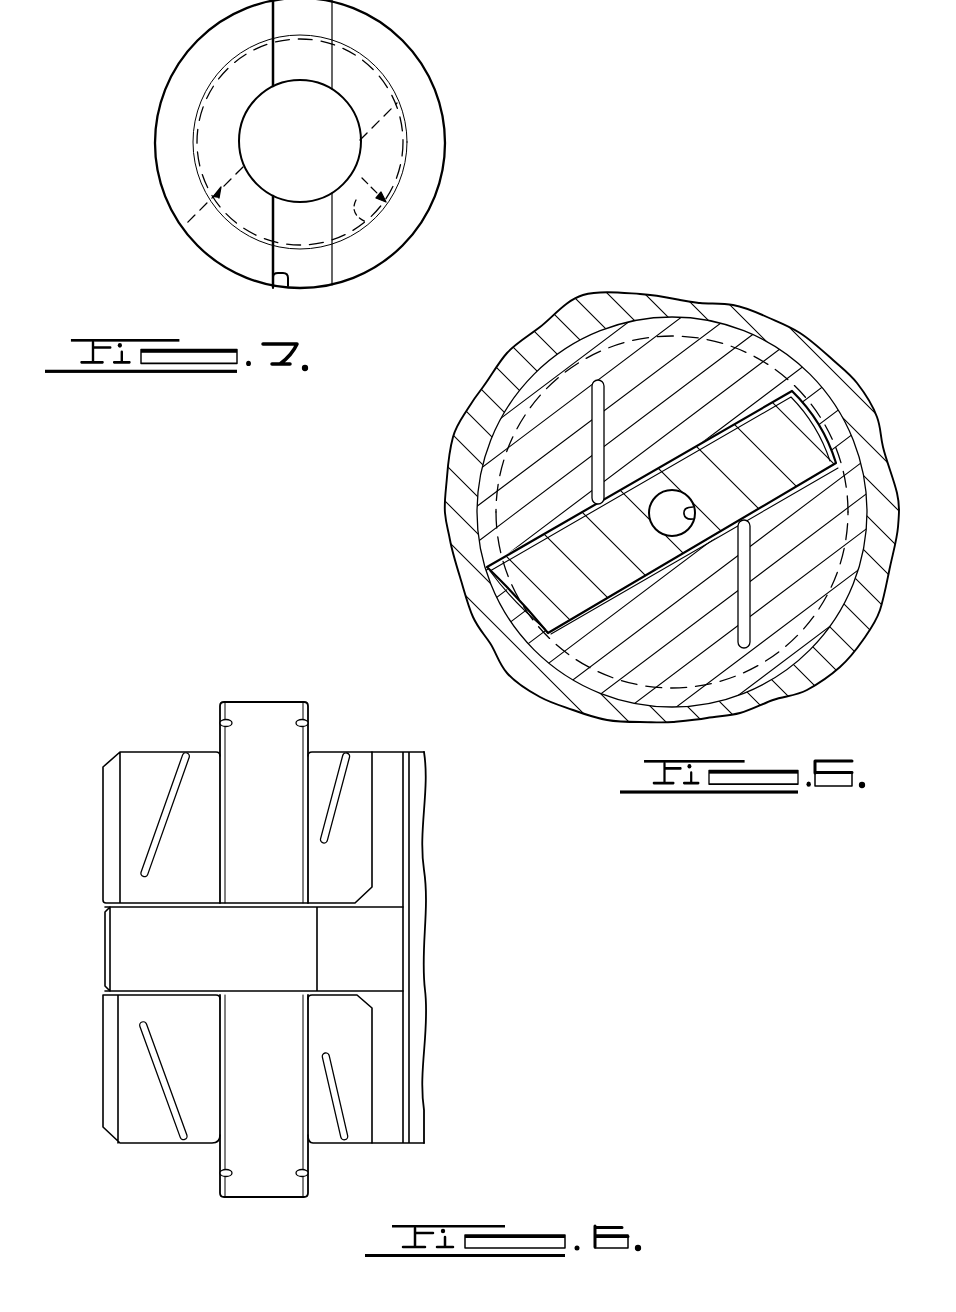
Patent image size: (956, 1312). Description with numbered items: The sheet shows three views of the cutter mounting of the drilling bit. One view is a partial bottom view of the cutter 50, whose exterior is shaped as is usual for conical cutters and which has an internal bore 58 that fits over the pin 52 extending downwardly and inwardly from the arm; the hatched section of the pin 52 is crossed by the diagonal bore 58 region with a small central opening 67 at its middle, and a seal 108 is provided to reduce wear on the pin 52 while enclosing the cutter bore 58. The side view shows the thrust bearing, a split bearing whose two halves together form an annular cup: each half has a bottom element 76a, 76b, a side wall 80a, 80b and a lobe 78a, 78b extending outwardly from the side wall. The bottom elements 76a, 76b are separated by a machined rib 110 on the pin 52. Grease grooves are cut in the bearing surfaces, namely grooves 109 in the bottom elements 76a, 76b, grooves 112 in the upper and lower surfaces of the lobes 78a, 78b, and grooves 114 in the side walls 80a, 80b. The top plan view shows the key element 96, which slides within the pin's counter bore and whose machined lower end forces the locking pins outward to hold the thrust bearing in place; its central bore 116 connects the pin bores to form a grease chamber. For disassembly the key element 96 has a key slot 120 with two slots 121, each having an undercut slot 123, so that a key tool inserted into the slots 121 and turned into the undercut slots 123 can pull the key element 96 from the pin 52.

In FIG. 5, the cutter 50 is at (818, 680).
In FIG. 6, the pin 52 is at (262, 972).
In FIG. 5, the internal bore 58 is at (837, 418).
In FIG. 5, the central bore 67 is at (686, 504).
In FIG. 5, the bottom element 76a is at (625, 690).
In FIG. 5, the bottom element 76b is at (703, 357).
In FIG. 6, the lobe 78a is at (263, 1187).
In FIG. 6, the lobe 78b is at (260, 708).
In FIG. 6, the side wall 80a is at (147, 1123).
In FIG. 6, the side wall 80b is at (132, 757).
In FIG. 7, the key element 96 is at (420, 50).
In FIG. 6, the seal 108 is at (390, 1137).
In FIG. 5, the grease grooves 109 is at (604, 410).
In FIG. 5, the machined rib 110 is at (832, 413).
In FIG. 6, the machined rib 110 is at (125, 945).
In FIG. 6, the grease grooves 112 is at (312, 720).
In FIG. 6, the grease grooves 114 is at (177, 767).
In FIG. 7, the central bore 116 is at (385, 226).
In FIG. 7, the key slot 120 is at (313, 277).
In FIG. 7, the slots 121 is at (280, 291).
In FIG. 7, the undercut slot 123 is at (191, 225).